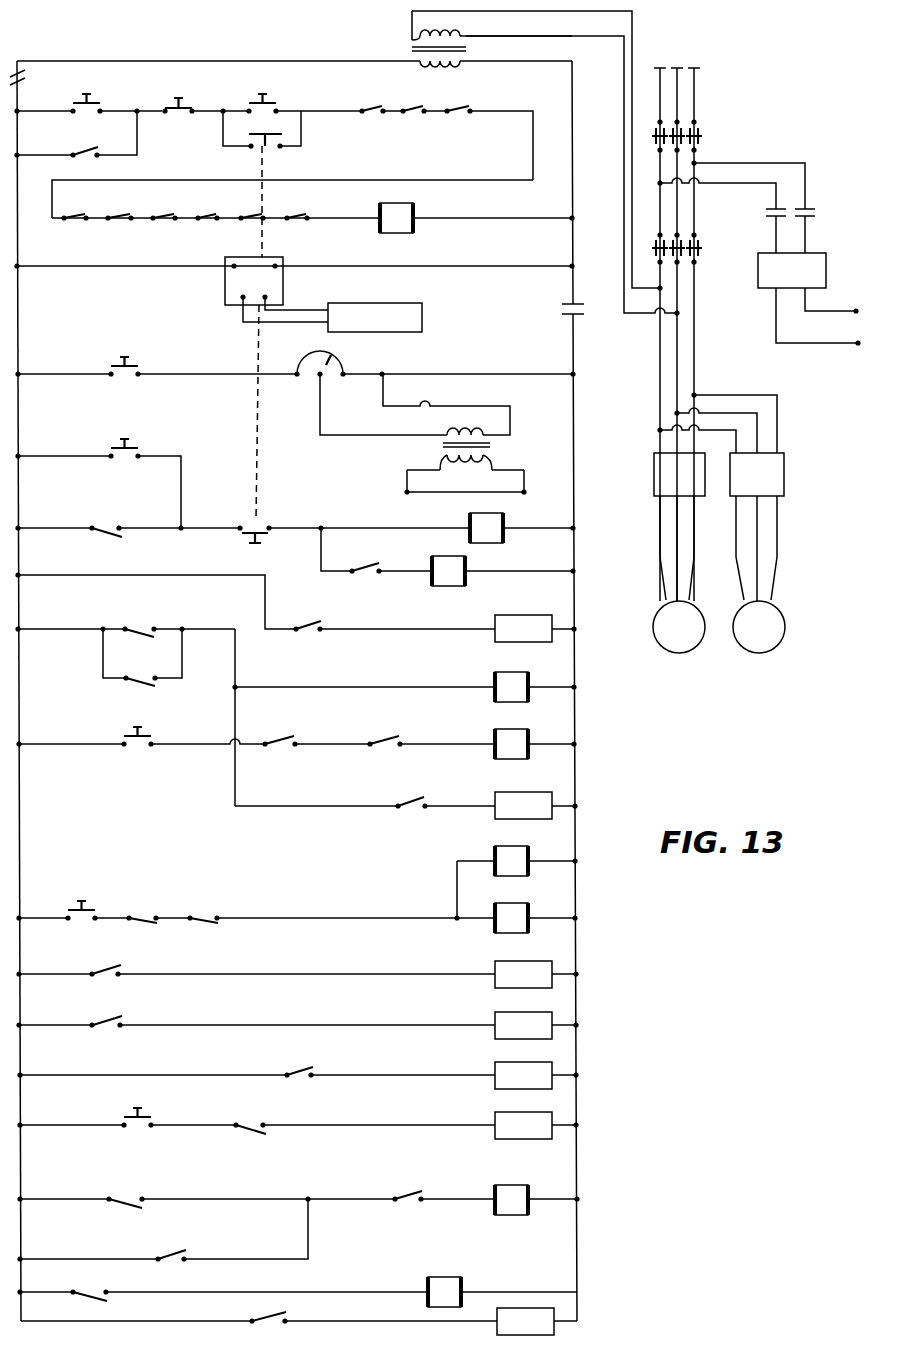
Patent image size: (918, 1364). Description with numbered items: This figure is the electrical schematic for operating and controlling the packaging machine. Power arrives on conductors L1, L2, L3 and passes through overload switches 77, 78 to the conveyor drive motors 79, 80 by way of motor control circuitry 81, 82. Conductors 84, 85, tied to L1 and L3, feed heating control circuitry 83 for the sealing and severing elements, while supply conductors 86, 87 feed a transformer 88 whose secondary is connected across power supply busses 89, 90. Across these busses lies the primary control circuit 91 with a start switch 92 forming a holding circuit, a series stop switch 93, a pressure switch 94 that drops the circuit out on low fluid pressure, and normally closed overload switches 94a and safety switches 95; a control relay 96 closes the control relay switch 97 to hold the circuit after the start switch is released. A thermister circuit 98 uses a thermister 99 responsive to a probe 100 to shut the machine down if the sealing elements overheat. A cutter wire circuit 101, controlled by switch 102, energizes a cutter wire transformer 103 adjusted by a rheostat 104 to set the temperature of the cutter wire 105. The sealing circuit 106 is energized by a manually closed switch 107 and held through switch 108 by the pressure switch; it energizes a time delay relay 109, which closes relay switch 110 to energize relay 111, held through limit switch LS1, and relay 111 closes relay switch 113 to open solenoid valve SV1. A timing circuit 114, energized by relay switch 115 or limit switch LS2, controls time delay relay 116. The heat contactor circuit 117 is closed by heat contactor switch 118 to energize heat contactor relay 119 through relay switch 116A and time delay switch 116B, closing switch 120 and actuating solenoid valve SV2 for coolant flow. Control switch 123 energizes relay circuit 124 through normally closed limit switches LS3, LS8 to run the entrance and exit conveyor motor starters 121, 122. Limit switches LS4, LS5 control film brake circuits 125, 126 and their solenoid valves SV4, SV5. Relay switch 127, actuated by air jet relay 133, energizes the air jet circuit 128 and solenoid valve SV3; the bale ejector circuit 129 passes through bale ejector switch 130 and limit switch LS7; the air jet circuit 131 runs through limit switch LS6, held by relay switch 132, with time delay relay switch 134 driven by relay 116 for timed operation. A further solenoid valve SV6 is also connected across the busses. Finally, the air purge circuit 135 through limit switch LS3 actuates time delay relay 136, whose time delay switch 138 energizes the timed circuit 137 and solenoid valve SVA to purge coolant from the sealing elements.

The overload switch 77 is at (701, 142).
The overload switch 78 is at (701, 250).
The conveyor drive motor 79 is at (686, 652).
The conveyor drive motor 80 is at (776, 652).
The motor control circuitry 81 is at (785, 484).
The motor control circuitry 82 is at (654, 480).
The heating control circuitry 83 is at (822, 264).
The conductor 84 is at (755, 182).
The conductor 85 is at (808, 183).
The electrical supply conductor 86 is at (634, 48).
The electrical supply conductor 87 is at (634, 64).
The transformer 88 is at (408, 44).
The power supply bus 89 is at (19, 258).
The power supply bus 90 is at (574, 180).
The primary control circuit 91 is at (387, 181).
The start switch 92 is at (89, 102).
The stop switch 93 is at (176, 104).
The pressure switch 94 is at (250, 101).
The overload switches 94a is at (407, 110).
The safety switches 95 is at (207, 214).
The control relay 96 is at (413, 214).
The control relay switch 97 is at (79, 152).
The thermister circuit 98 is at (476, 266).
The thermister 99 is at (224, 284).
The probe 100 is at (410, 304).
The cutter wire circuit 101 is at (56, 373).
The switch 102 is at (135, 363).
The cutter wire transformer 103 is at (440, 449).
The rheostat 104 is at (345, 362).
The cutter wire 105 is at (455, 495).
The sealing circuit 106 is at (210, 527).
The manually closed switch 107 is at (136, 448).
The switch 108 is at (271, 521).
The time delay relay 109 is at (504, 525).
The relay switch 110 is at (358, 568).
The relay 111 is at (466, 582).
The relay switch 113 is at (302, 625).
The timing circuit 114 is at (237, 682).
The relay switch 115 is at (140, 626).
The time delay relay 116 is at (494, 696).
The relay switch 116A is at (275, 738).
The time delay switch 116B is at (392, 740).
The heat contactor circuit 117 is at (205, 746).
The heat contactor switch 118 is at (145, 740).
The heat contactor relay 119 is at (494, 760).
The switch 120 is at (406, 800).
The entrance conveyor motor starter 121 is at (494, 858).
The exit conveyor motor starter 122 is at (528, 914).
The control switch 123 is at (92, 910).
The relay circuit 124 is at (376, 918).
The film brake circuit 125 is at (308, 974).
The film brake circuit 126 is at (328, 1025).
The relay switch 127 is at (302, 1069).
The air jet circuit 128 is at (428, 1075).
The bale ejector circuit 129 is at (392, 1125).
The bale ejector switch 130 is at (145, 1120).
The air jet circuit 131 is at (330, 1198).
The relay switch 132 is at (168, 1260).
The air jet relay 133 is at (493, 1212).
The time delay relay switch 134 is at (398, 1196).
The air purge circuit 135 is at (322, 1284).
The time delay relay 136 is at (460, 1280).
The timed circuit 137 is at (170, 1322).
The time delay switch 138 is at (266, 1316).
The limit switch LS1 is at (118, 534).
The limit switch LS2 is at (140, 670).
The limit switch LS3 is at (142, 914).
The limit switch LS4 is at (104, 966).
The limit switch LS5 is at (110, 1016).
The limit switch LS6 is at (125, 1198).
The limit switch LS7 is at (254, 1124).
The limit switch LS8 is at (208, 914).
The conductor L1 is at (664, 80).
The conductor L2 is at (680, 98).
The conductor L3 is at (697, 110).
The solenoid valve SV1 is at (536, 628).
The solenoid valve SV2 is at (536, 805).
The solenoid valve SV3 is at (537, 1075).
The solenoid valve SV4 is at (537, 974).
The solenoid valve SV5 is at (537, 1025).
The solenoid valve SV6 is at (537, 1125).
The solenoid valve SVA is at (537, 1321).